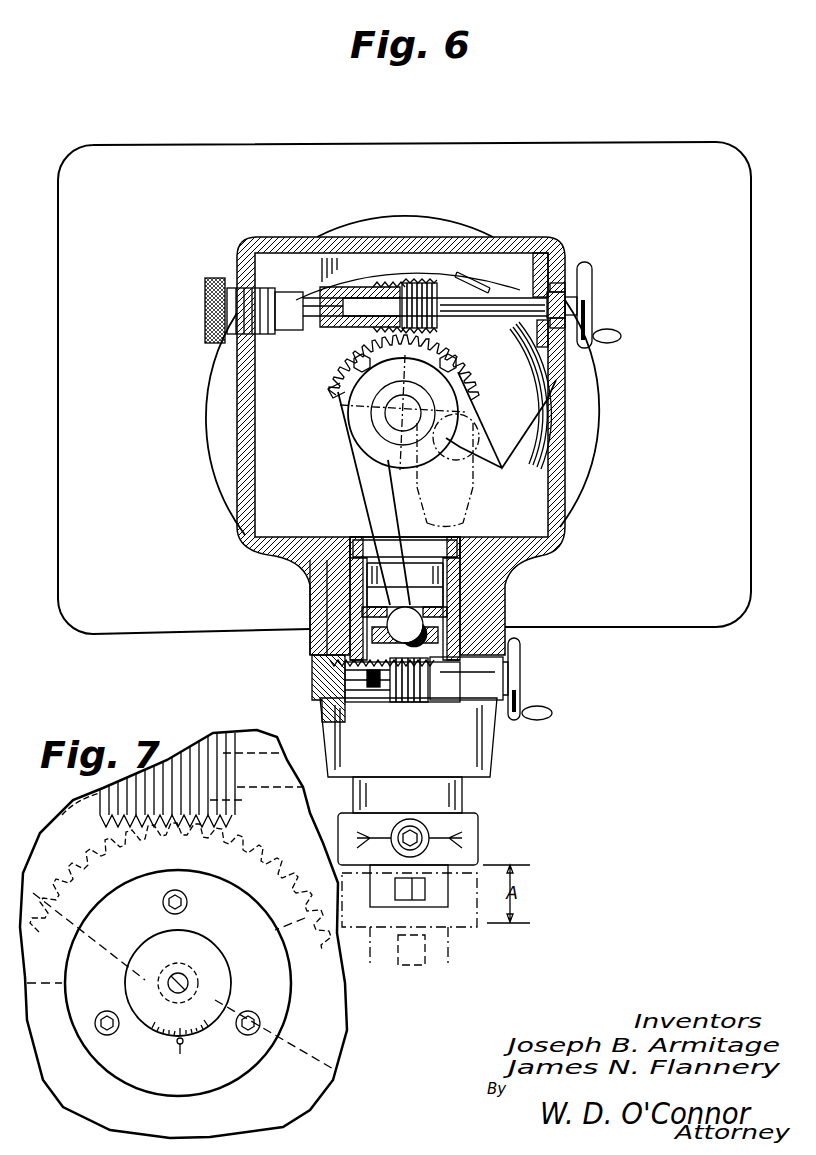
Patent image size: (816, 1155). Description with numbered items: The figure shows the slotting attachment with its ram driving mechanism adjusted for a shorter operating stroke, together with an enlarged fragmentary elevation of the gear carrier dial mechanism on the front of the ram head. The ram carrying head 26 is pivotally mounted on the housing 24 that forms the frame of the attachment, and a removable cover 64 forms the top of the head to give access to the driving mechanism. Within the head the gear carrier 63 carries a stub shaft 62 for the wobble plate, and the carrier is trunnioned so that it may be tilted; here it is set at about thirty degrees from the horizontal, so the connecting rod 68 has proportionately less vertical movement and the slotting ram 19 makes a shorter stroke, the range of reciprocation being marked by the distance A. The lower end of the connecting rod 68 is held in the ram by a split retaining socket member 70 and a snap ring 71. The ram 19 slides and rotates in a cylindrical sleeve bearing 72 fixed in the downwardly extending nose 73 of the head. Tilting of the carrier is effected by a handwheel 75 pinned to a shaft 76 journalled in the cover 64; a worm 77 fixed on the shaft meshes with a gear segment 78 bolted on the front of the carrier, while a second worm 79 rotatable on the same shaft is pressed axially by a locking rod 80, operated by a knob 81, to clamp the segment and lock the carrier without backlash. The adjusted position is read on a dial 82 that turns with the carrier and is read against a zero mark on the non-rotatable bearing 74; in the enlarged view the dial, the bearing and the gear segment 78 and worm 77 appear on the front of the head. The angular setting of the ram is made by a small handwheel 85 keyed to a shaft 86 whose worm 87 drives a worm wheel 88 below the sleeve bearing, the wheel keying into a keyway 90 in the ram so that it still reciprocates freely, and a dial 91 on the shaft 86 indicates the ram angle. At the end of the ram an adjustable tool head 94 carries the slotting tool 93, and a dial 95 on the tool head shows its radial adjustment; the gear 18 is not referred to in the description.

In FIG. 6, the slotting ram 19 is at (462, 793).
In FIG. 6, the housing 24 is at (668, 622).
In FIG. 6, the ram carrying head 26 is at (567, 546).
In FIG. 6, the stub shaft 62 is at (492, 290).
In FIG. 6, the gear carrier 63 is at (507, 452).
In FIG. 6, the removable cover 64 is at (558, 243).
In FIG. 6, the connecting rod 68 is at (368, 490).
In FIG. 6, the split retaining socket member 70 is at (405, 585).
In FIG. 6, the snap ring 71 is at (405, 585).
In FIG. 6, the sleeve bearing 72 is at (480, 536).
In FIG. 6, the nose 73 is at (489, 758).
In FIG. 6, the bearing 74 is at (402, 375).
In FIG. 7, the bearing 74 is at (283, 985).
In FIG. 6, the handwheel 75 is at (594, 273).
In FIG. 6, the shaft 76 is at (472, 306).
In FIG. 7, the shaft 76 is at (263, 752).
In FIG. 6, the worm 77 is at (433, 290).
In FIG. 7, the worm 77 is at (248, 801).
In FIG. 6, the gear segment 78 is at (456, 379).
In FIG. 6, the second worm 79 is at (402, 284).
In FIG. 7, the second worm 79 is at (95, 798).
In FIG. 6, the locking rod 80 is at (345, 382).
In FIG. 6, the knob 81 is at (203, 333).
In FIG. 7, the dial 82 is at (139, 983).
In FIG. 6, the small handwheel 85 is at (523, 653).
In FIG. 6, the shaft 86 is at (378, 690).
In FIG. 6, the worm 87 is at (407, 667).
In FIG. 6, the worm wheel 88 is at (330, 683).
In FIG. 6, the keyway 90 is at (407, 627).
In FIG. 6, the dial 91 is at (508, 671).
In FIG. 6, the slotting tool 93 is at (403, 893).
In FIG. 6, the tool head 94 is at (470, 827).
In FIG. 6, the dial 95 is at (422, 818).
In FIG. 7, the gear 18 is at (262, 846).